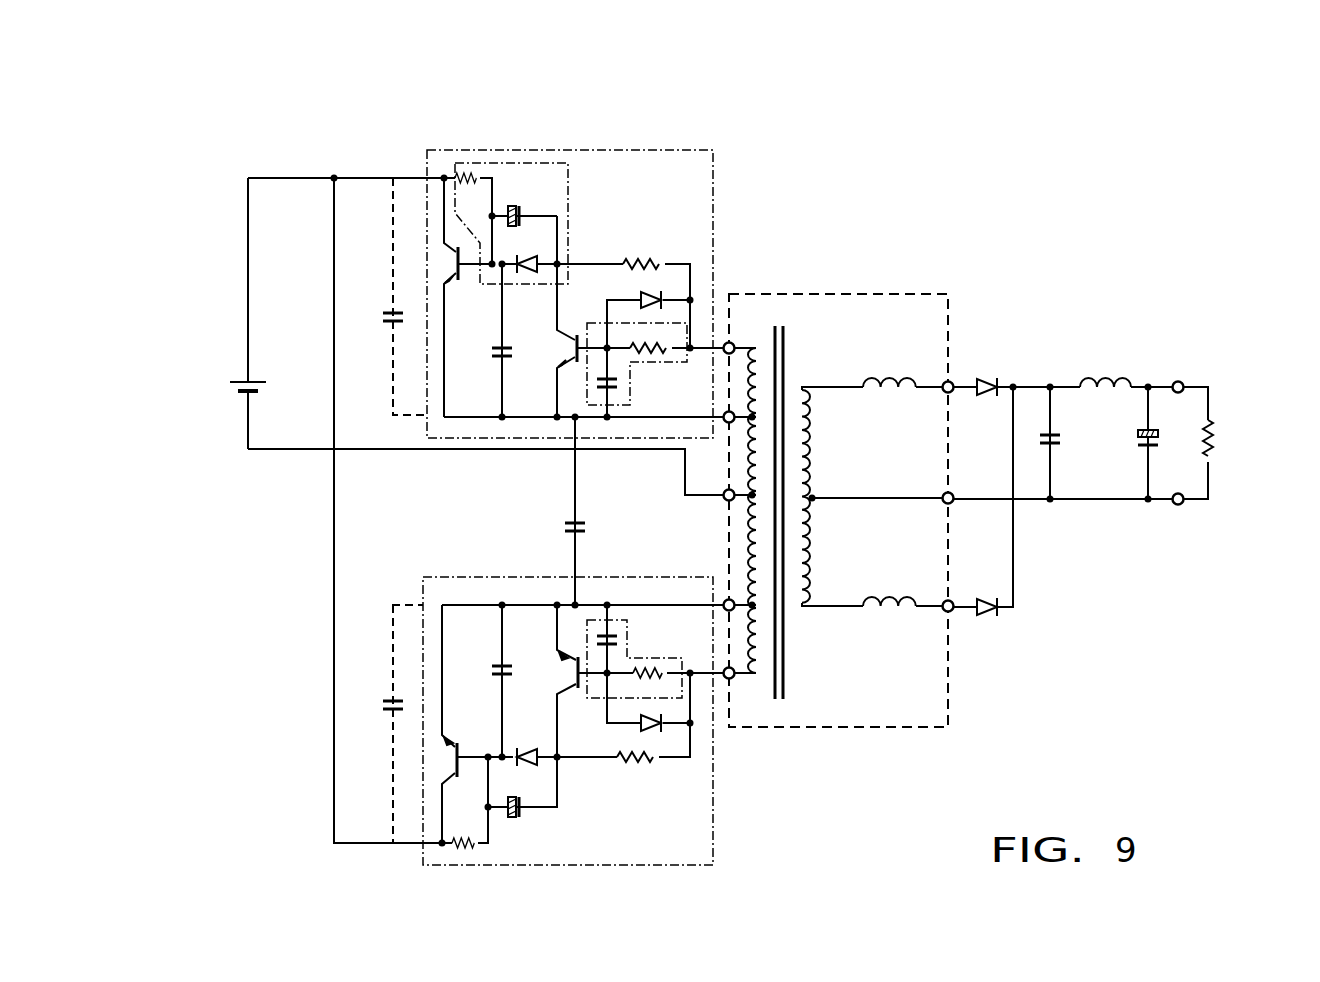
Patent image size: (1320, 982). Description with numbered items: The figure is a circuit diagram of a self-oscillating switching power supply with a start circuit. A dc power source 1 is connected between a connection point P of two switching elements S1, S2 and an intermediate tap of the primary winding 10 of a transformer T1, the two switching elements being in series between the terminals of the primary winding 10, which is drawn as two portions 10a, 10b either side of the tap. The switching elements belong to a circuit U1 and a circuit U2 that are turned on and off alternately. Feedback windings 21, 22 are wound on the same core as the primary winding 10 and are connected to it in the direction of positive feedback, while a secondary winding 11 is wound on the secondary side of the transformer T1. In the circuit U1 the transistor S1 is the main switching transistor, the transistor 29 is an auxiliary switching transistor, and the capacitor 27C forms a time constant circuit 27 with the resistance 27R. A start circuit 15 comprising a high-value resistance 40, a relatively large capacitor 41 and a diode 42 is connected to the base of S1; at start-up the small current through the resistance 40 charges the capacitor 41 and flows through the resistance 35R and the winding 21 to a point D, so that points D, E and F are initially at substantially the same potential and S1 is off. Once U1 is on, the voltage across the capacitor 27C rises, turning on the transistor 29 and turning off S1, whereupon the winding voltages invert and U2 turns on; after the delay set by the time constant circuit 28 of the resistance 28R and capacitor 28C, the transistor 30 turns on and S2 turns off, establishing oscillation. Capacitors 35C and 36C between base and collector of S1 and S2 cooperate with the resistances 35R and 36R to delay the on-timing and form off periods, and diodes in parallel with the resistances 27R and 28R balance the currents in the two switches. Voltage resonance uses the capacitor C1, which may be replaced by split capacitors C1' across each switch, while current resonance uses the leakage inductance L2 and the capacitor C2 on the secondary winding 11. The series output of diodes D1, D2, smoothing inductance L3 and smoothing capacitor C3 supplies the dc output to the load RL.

The dc power source 1 is at (230, 384).
The connection point P is at (335, 177).
The split capacitor C1' is at (323, 446).
The start circuit 15 is at (596, 274).
The circuit U1 is at (453, 440).
The circuit U2 is at (423, 592).
The main switching transistor S1 is at (453, 262).
The switching element S2 is at (452, 755).
The resistance 40 is at (468, 176).
The capacitor 41 is at (521, 211).
The diode 42 is at (540, 252).
The point F is at (502, 265).
The point D is at (444, 415).
The point E is at (558, 263).
The capacitor 35C is at (487, 347).
The capacitor 36C is at (498, 667).
The auxiliary switching transistor 29 is at (657, 262).
The resistance 35R is at (668, 297).
The resistance 36R is at (643, 764).
The time constant circuit 27 is at (600, 392).
The resistance 27R is at (668, 343).
The capacitor 27C is at (592, 392).
The time constant circuit 28 is at (623, 612).
The resistance 28R is at (648, 668).
The capacitor 28C is at (614, 638).
The transistor 30 is at (559, 682).
The capacitor C1 is at (531, 511).
The transformer T1 is at (853, 730).
The primary winding 10 is at (628, 460).
The first primary winding portion 10a is at (748, 455).
The second primary winding portion 10b is at (748, 520).
The feedback winding 21 is at (775, 324).
The feedback winding 22 is at (770, 702).
The secondary winding 11 is at (805, 388).
The leakage inductance L2 is at (880, 385).
The smoothing inductance L3 is at (1110, 386).
The diode D1 is at (978, 384).
The diode D2 is at (988, 617).
The capacitor C2 is at (1056, 447).
The smoothing capacitor C3 is at (1157, 450).
The load RL is at (1213, 444).